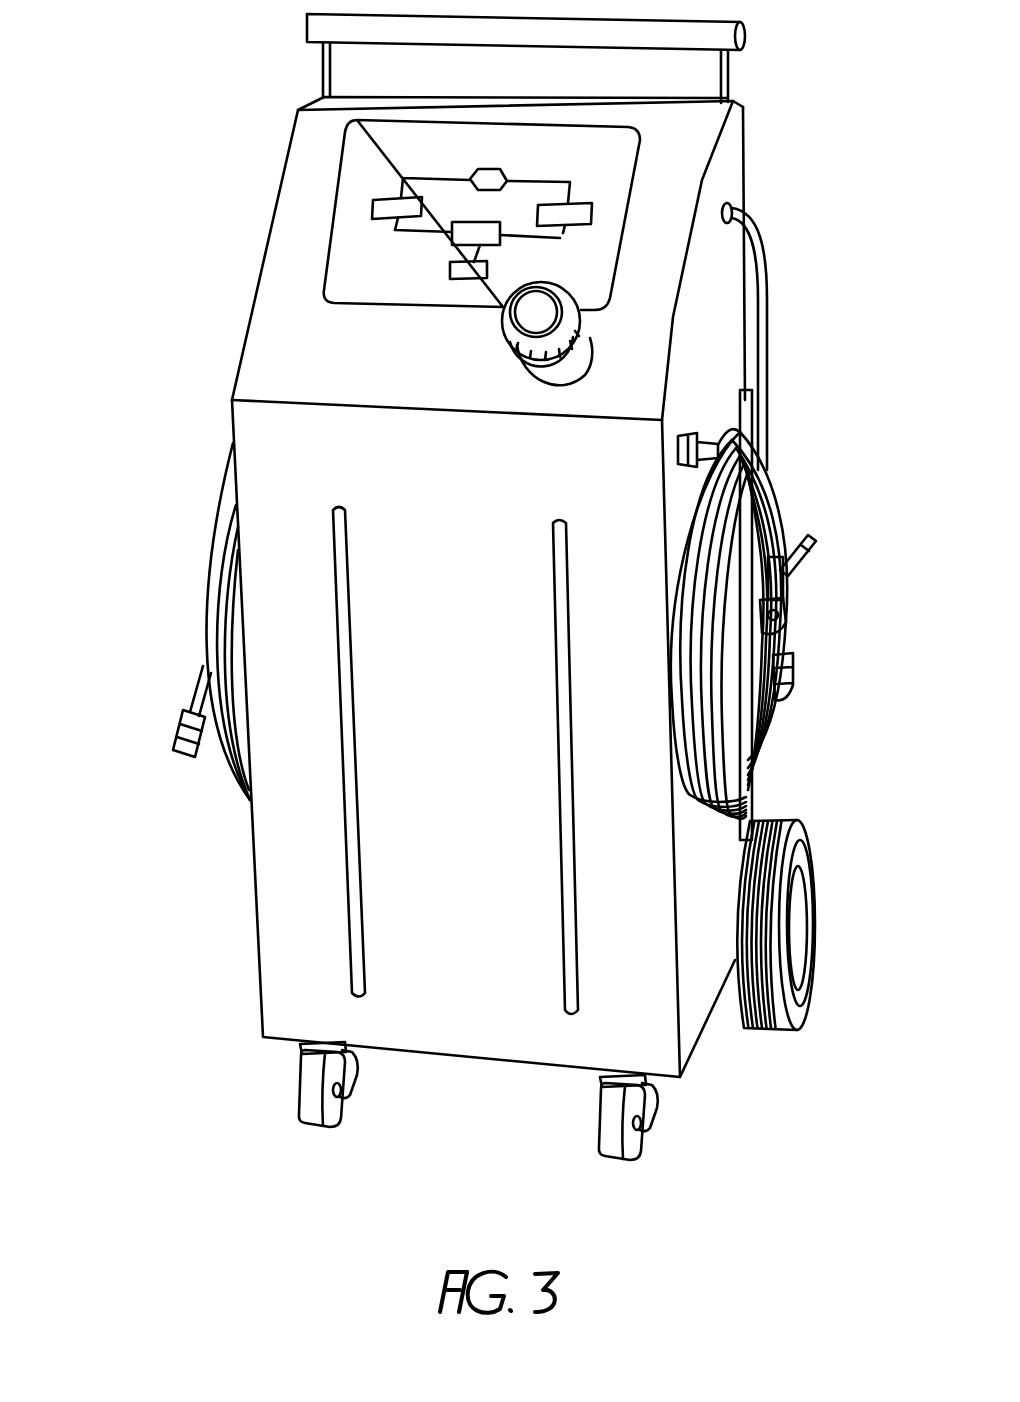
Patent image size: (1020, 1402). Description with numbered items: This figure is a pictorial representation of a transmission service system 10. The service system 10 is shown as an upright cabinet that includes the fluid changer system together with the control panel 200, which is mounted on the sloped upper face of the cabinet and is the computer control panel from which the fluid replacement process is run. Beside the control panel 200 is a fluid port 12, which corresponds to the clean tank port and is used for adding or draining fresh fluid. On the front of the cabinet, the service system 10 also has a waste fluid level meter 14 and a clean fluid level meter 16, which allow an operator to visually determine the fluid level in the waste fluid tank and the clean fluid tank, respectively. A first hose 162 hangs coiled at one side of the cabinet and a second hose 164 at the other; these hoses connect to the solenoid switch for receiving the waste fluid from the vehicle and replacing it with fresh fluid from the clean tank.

The transmission service system 10 is at (175, 182).
The fluid port 12 is at (573, 363).
The waste fluid level meter 14 is at (353, 922).
The clean fluid level meter 16 is at (567, 972).
The first hose 162 is at (175, 735).
The second hose 164 is at (793, 677).
The control panel 200 is at (367, 170).